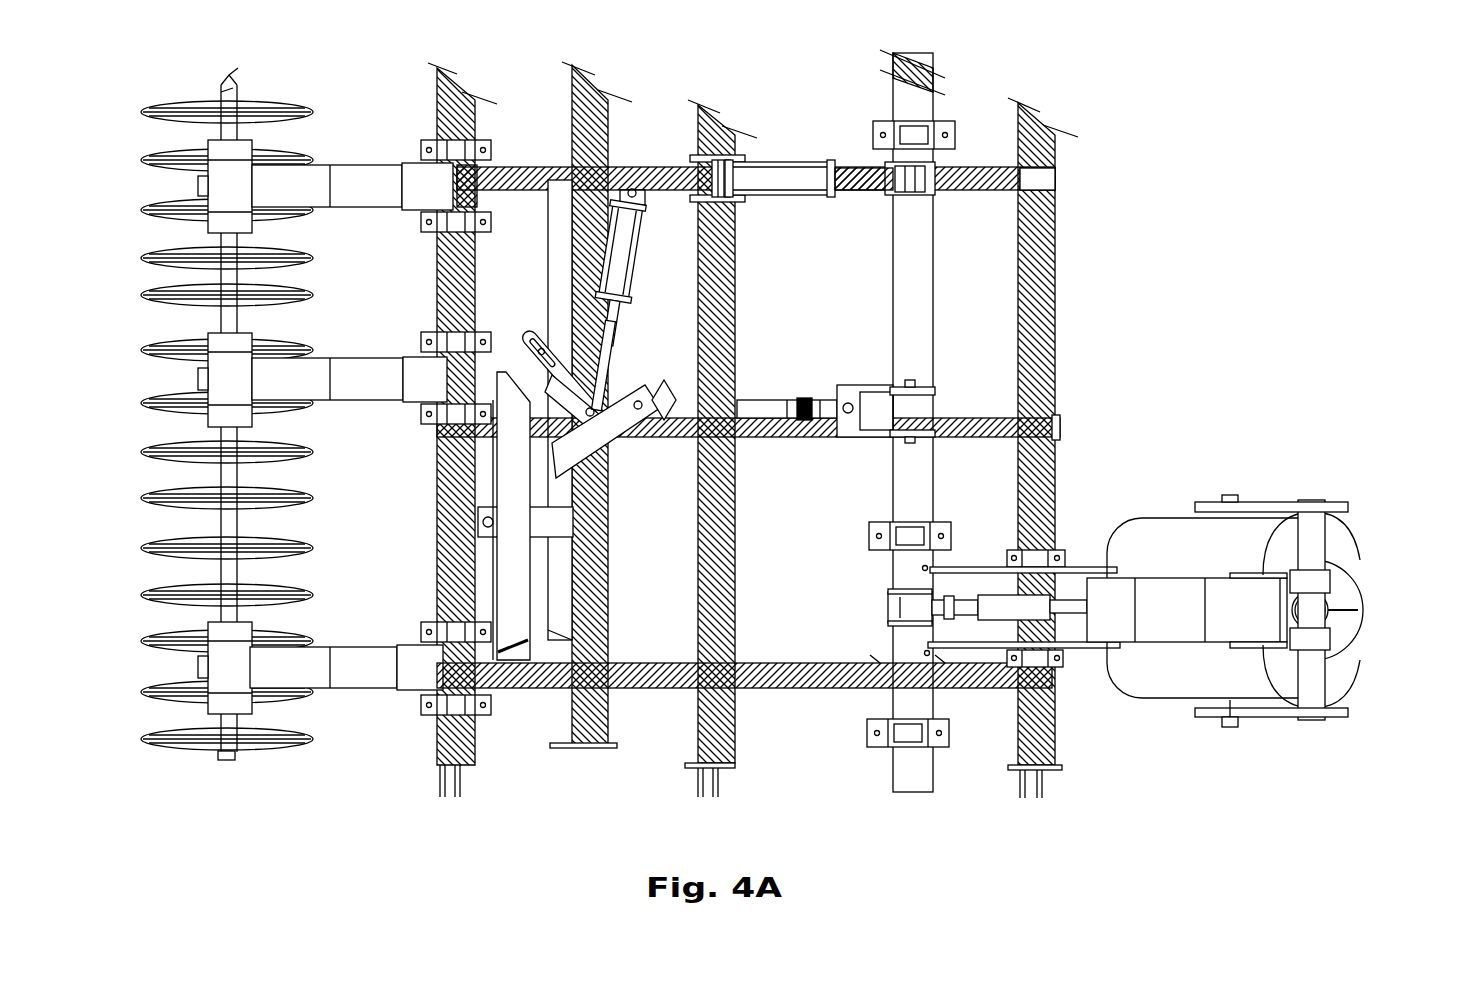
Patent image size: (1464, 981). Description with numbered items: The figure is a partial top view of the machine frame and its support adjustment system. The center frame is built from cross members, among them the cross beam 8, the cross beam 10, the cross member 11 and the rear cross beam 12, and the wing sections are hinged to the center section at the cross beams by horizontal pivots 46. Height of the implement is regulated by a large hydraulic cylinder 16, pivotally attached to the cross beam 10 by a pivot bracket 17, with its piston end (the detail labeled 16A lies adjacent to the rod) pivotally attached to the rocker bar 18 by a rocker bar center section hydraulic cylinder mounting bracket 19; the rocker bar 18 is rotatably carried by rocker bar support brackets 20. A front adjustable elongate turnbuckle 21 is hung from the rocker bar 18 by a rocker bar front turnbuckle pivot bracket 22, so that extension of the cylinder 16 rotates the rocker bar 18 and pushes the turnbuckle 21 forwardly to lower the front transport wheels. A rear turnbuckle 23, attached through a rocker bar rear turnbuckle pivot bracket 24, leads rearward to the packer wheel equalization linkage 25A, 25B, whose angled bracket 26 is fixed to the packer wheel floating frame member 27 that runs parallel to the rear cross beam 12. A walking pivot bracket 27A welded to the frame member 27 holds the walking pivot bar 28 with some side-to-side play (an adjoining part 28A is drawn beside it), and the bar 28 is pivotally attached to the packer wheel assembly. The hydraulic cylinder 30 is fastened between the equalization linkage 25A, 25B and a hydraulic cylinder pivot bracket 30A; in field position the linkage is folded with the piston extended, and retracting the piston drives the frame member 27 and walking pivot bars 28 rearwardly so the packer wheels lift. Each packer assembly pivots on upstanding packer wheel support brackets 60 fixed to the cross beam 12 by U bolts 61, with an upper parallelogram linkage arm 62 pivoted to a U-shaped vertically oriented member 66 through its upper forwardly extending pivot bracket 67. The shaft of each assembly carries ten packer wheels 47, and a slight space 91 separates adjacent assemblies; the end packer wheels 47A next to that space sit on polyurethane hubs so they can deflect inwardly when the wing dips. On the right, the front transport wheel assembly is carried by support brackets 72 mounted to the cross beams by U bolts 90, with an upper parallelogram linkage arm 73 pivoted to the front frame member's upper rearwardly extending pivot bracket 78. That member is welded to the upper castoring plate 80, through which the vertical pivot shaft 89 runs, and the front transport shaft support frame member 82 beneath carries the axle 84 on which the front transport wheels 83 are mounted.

The cross beam 8 is at (1060, 217).
The cross beam 10 is at (737, 236).
The cross member 11 is at (612, 709).
The rear cross beam 12 is at (440, 765).
The hydraulic cylinder 16 is at (790, 182).
The cylinder rod 16A is at (865, 178).
The pivot bracket 17 is at (718, 155).
The rocker bar 18 is at (935, 300).
The rocker bar center section hydraulic cylinder mounting bracket 19 is at (930, 188).
The rocker bar support bracket 20 is at (940, 118).
The front adjustable elongate turnbuckle 21 is at (995, 603).
The rocker bar front turnbuckle pivot bracket 22 is at (885, 585).
The rear turnbuckle 23 is at (772, 403).
The rocker bar rear turnbuckle pivot bracket 24 is at (925, 388).
The equalization linkage 25A is at (612, 393).
The equalization linkage 25B is at (575, 343).
The equalization linkage/angled bracket 26 is at (625, 435).
The packer wheel floating frame member 27 is at (610, 500).
The walking pivot bracket 27A is at (600, 537).
The walking pivot bar 28 is at (500, 692).
The slotted link 28A is at (505, 352).
The hydraulic cylinder 30 is at (635, 226).
The hydraulic cylinder pivot bracket 30A is at (605, 185).
The horizontal pivot 46 is at (462, 789).
The packer wheel 47 is at (152, 677).
The end packer wheel 47A is at (185, 757).
The packer wheel support bracket 60 is at (405, 645).
The U bolt 61 is at (422, 718).
The upper parallelogram linkage arm 62 is at (400, 390).
The U-shaped vertically oriented member 66 is at (225, 412).
The upper forwardly extending pivot bracket 67 is at (322, 370).
The front transport wheel assembly support bracket 72 is at (1108, 558).
The upper parallelogram linkage arm 73 is at (1180, 610).
The upper rearwardly extending pivot bracket 78 is at (1320, 593).
The upper castoring plate 80 is at (1350, 613).
The front transport shaft support frame member 82 is at (1283, 502).
The front transport wheel 83 is at (1172, 690).
The axle 84 is at (1230, 727).
The vertical pivot shaft 89 is at (1335, 596).
The U bolt 90 is at (930, 562).
The space 91 is at (180, 265).